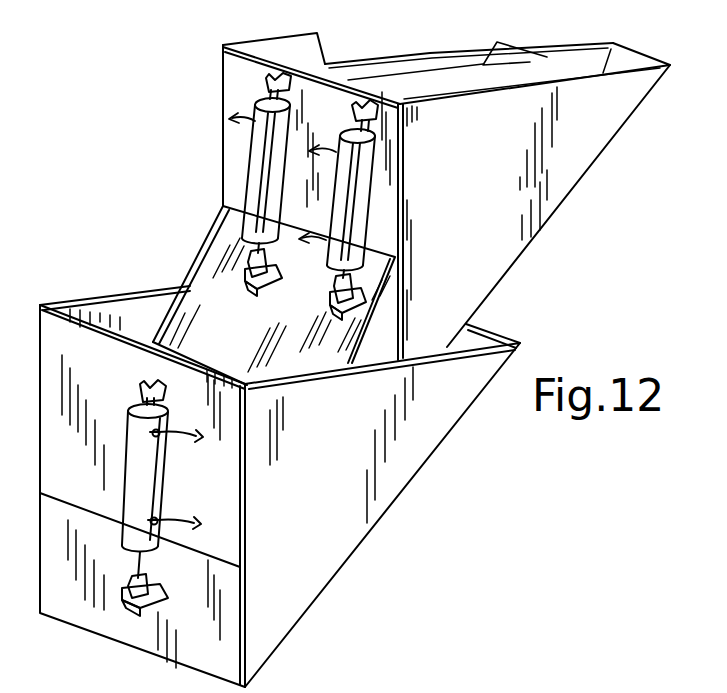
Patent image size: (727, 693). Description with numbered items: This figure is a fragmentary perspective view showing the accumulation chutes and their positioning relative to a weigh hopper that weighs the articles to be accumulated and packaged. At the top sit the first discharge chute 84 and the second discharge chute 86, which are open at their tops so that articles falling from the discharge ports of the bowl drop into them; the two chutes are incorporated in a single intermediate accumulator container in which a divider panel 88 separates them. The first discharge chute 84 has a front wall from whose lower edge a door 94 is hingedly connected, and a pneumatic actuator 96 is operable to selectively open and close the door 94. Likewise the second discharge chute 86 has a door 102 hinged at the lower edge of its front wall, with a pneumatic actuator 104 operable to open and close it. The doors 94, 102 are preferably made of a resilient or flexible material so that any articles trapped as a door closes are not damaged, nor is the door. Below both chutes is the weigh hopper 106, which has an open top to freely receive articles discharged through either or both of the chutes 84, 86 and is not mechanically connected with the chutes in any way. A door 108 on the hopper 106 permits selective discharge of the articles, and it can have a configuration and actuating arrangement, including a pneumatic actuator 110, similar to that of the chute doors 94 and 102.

The first discharge chute 84 is at (558, 64).
The second discharge chute 86 is at (383, 63).
The divider panel 88 is at (489, 60).
The door 94 is at (374, 280).
The pneumatic actuator 96 is at (358, 168).
The door 102 is at (208, 277).
The pneumatic actuator 104 is at (258, 167).
The weigh hopper 106 is at (410, 445).
The door 108 is at (113, 627).
The pneumatic actuator 110 is at (152, 458).